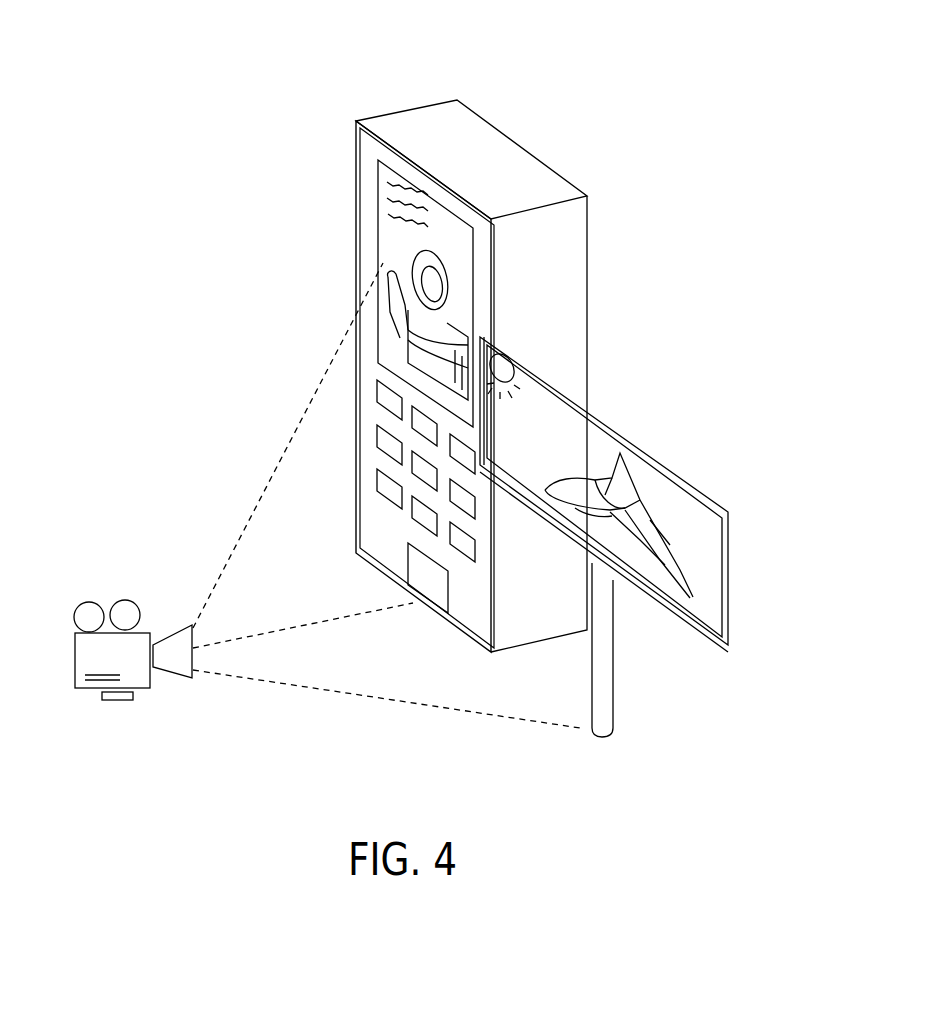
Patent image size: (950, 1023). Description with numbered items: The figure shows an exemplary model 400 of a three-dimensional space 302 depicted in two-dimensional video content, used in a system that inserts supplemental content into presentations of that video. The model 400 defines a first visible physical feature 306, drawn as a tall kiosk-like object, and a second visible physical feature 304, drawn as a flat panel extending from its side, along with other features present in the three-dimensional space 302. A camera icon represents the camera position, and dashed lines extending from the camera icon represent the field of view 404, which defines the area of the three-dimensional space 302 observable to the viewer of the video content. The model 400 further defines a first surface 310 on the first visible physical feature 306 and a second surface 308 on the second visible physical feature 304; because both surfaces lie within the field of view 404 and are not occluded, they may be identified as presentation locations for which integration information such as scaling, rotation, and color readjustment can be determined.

The model 400 is at (175, 48).
The three-dimensional space 302 is at (645, 292).
The first visible physical feature 306 is at (342, 215).
The first surface 310 is at (385, 265).
The second visible physical feature 304 is at (737, 572).
The second surface 308 is at (701, 559).
The field of view 404 is at (107, 590).